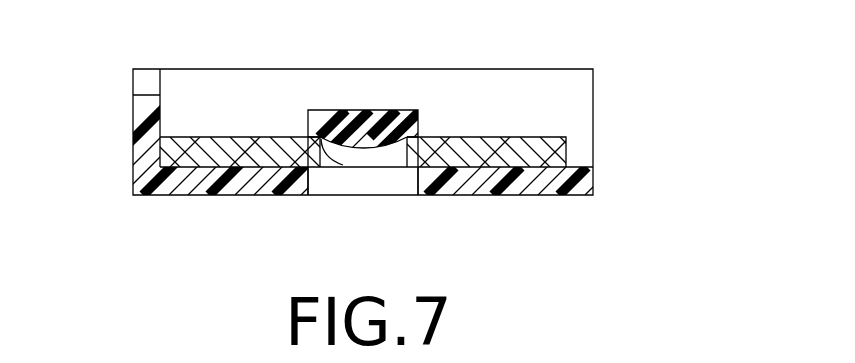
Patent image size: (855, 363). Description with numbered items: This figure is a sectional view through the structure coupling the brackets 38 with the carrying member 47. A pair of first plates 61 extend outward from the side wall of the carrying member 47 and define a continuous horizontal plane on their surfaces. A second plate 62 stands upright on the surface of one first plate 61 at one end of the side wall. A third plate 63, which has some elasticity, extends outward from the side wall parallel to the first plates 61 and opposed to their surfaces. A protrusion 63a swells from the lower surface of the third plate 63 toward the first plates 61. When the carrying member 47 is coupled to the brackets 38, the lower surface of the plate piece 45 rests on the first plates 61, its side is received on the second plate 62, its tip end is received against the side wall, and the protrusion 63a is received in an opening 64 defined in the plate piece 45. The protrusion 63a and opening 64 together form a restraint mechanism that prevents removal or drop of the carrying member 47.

The bracket 38 is at (533, 106).
The plate piece 45 is at (566, 152).
The carrying member 47 is at (102, 155).
The first plate 61 is at (233, 195).
The second plate 62 is at (163, 102).
The third plate 63 is at (409, 110).
The protrusion 63a is at (292, 138).
The opening 64 is at (405, 153).